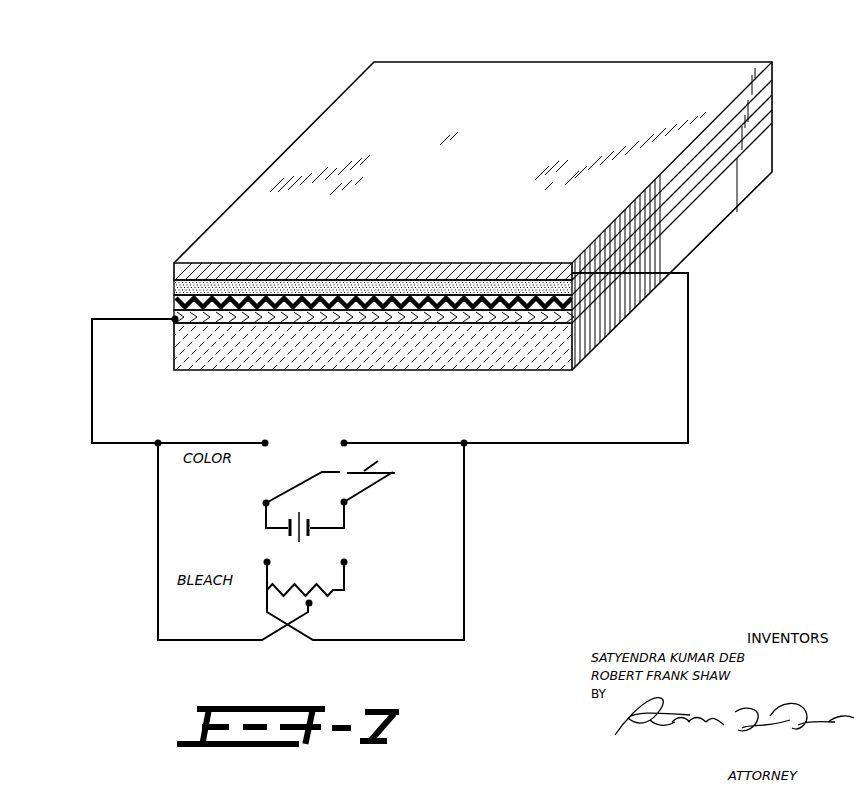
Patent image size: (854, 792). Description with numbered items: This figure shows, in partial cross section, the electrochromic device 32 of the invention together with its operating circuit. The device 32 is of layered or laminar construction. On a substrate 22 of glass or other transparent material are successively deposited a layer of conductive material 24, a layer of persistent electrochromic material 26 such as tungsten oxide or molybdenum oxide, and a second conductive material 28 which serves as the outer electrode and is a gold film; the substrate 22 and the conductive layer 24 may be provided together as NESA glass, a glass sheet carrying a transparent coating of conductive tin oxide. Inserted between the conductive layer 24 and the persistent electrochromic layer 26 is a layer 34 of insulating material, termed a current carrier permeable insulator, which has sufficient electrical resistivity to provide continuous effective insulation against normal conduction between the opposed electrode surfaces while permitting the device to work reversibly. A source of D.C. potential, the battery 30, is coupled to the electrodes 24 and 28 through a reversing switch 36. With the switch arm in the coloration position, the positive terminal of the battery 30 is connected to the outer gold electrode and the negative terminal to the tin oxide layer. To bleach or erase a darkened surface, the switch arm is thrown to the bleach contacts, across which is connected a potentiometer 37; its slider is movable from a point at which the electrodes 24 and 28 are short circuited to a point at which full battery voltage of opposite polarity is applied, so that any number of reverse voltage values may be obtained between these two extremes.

The substrate 22 is at (545, 360).
The conductive material layer 24 is at (175, 323).
The persistent electrochromic material layer 26 is at (175, 284).
The second conductive material layer 28 is at (252, 270).
The source of D.C. potential 30 is at (340, 538).
The device 32 is at (750, 214).
The insulating material layer 34 is at (180, 302).
The reversing switch 36 is at (371, 505).
The potentiometer 37 is at (330, 597).